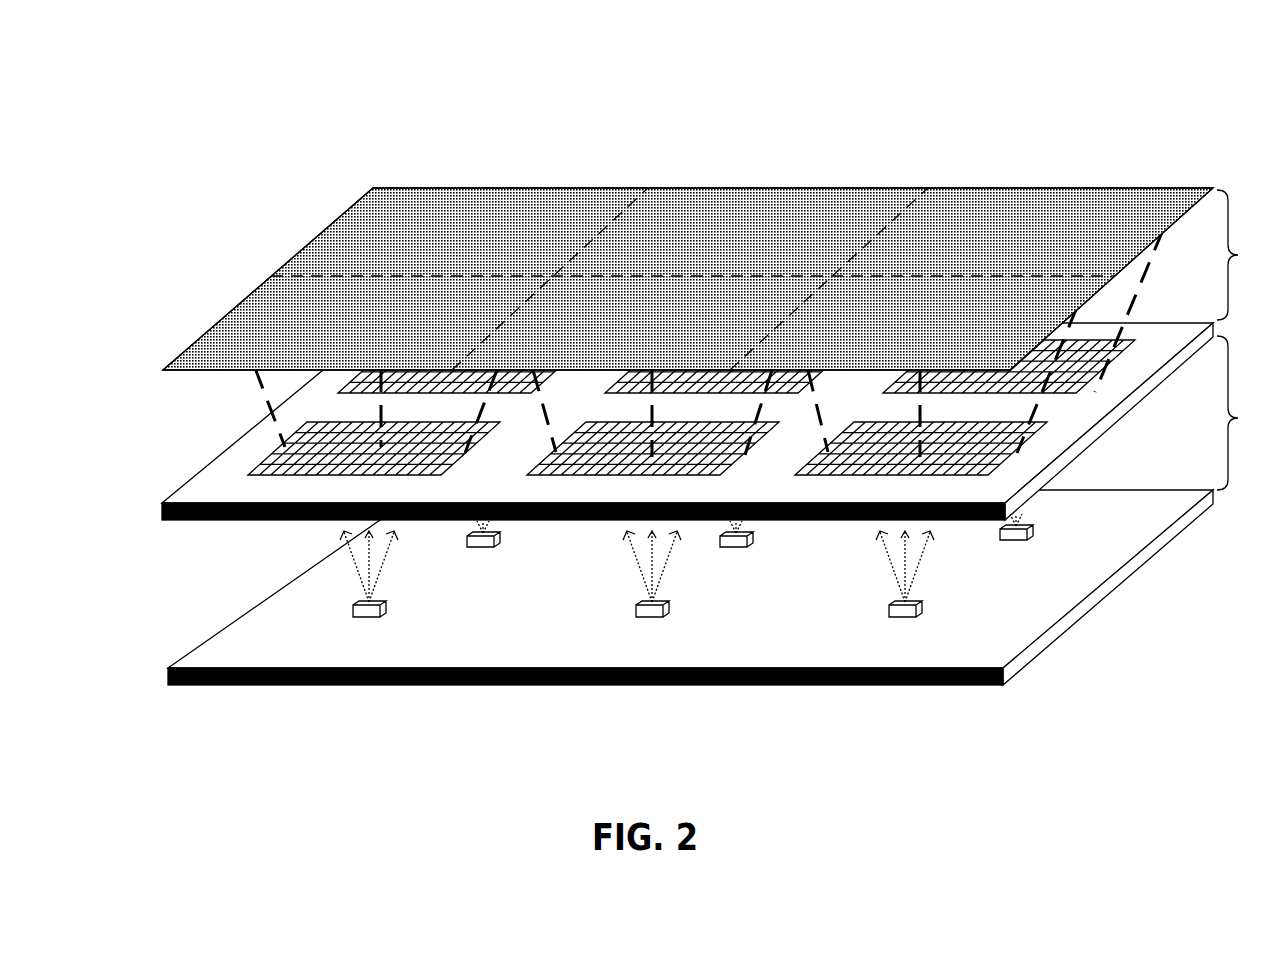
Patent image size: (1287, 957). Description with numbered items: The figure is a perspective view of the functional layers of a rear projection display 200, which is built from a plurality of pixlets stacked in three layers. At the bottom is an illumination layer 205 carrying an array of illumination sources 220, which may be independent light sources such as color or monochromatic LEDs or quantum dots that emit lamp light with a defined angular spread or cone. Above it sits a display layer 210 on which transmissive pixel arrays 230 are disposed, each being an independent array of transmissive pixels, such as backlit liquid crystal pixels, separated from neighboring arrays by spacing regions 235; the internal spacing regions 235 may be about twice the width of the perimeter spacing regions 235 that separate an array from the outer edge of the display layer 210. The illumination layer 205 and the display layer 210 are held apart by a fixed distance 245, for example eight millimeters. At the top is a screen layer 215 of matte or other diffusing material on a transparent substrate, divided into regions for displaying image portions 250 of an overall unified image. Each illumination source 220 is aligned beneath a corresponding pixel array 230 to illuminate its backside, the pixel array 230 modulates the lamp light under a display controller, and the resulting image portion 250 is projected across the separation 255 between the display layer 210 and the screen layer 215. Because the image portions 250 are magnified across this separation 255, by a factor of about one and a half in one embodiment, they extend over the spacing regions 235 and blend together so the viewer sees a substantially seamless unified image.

The rear projection display 200 is at (266, 142).
The illumination layer 205 is at (617, 587).
The display layer 210 is at (637, 421).
The screen layer 215 is at (671, 279).
The illumination sources 220 is at (672, 578).
The transmissive pixel arrays 230 is at (345, 457).
The spacing regions 235 is at (146, 404).
The fixed distance 245 is at (1249, 413).
The image portions 250 is at (462, 240).
The separation 255 is at (1249, 255).